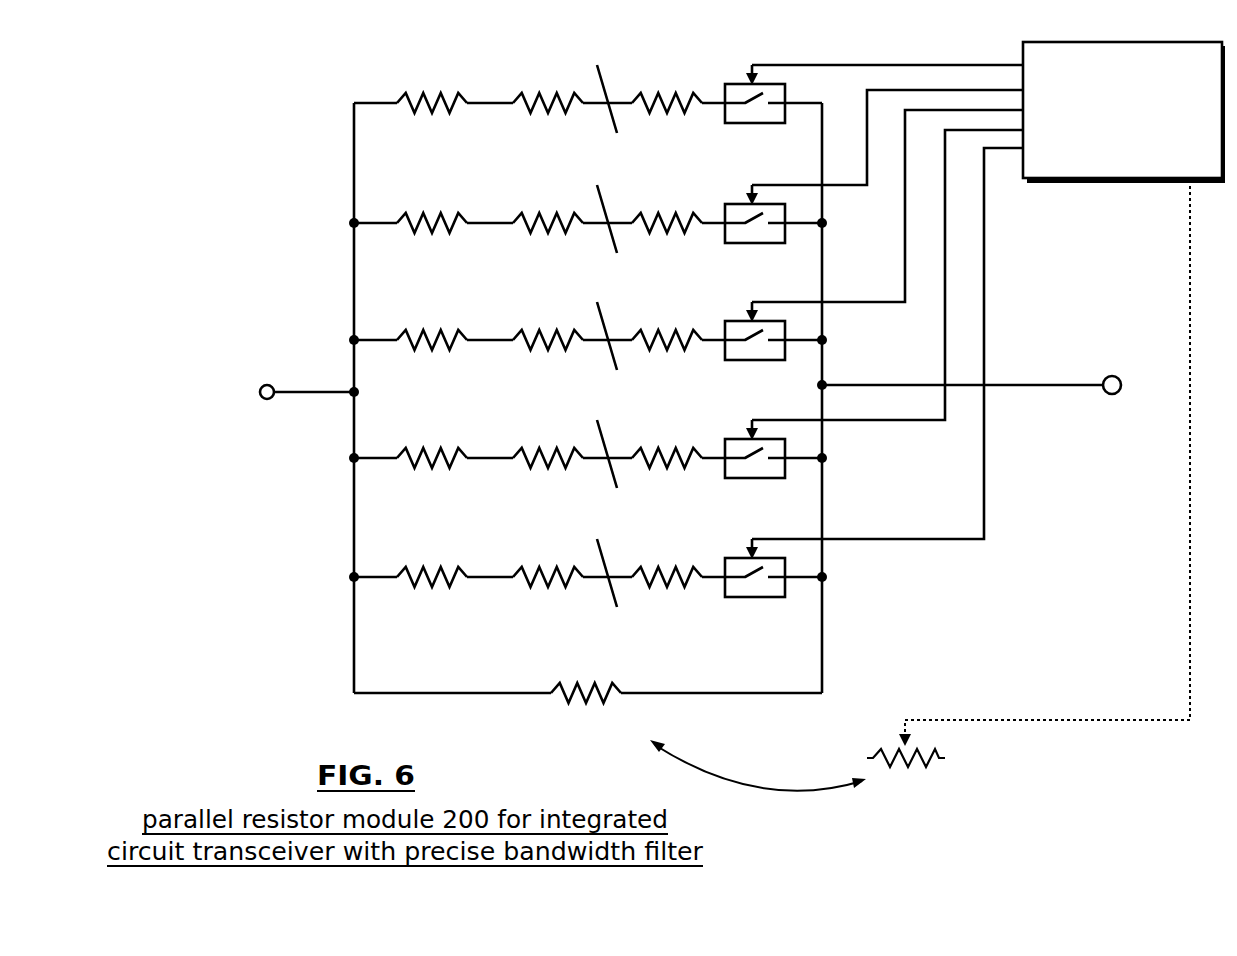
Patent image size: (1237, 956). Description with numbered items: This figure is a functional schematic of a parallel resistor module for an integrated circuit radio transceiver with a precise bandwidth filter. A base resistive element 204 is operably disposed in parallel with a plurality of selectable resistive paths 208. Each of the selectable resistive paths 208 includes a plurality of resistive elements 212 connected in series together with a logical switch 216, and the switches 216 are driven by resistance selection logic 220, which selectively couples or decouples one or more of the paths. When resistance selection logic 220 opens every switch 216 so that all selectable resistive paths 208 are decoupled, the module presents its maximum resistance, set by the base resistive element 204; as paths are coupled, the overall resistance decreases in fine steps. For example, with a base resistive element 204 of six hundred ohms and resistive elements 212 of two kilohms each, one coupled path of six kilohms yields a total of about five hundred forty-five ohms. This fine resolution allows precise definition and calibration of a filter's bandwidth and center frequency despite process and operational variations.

The base resistive element 204 is at (567, 697).
The selectable resistive paths 208 is at (548, 359).
The resistive elements 212 is at (409, 582).
The logical switch 216 is at (735, 598).
The resistance selection logic 220 is at (1090, 181).